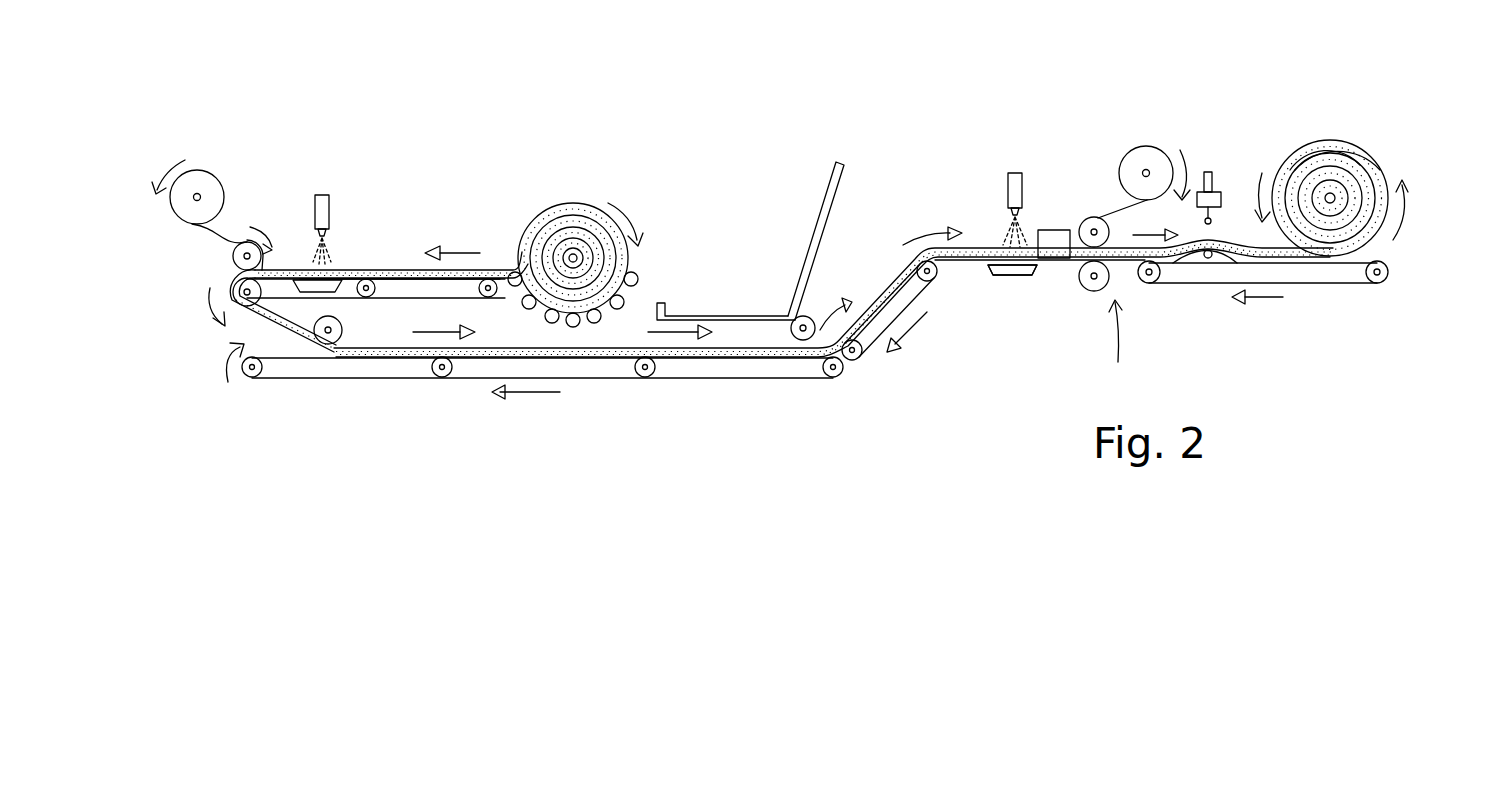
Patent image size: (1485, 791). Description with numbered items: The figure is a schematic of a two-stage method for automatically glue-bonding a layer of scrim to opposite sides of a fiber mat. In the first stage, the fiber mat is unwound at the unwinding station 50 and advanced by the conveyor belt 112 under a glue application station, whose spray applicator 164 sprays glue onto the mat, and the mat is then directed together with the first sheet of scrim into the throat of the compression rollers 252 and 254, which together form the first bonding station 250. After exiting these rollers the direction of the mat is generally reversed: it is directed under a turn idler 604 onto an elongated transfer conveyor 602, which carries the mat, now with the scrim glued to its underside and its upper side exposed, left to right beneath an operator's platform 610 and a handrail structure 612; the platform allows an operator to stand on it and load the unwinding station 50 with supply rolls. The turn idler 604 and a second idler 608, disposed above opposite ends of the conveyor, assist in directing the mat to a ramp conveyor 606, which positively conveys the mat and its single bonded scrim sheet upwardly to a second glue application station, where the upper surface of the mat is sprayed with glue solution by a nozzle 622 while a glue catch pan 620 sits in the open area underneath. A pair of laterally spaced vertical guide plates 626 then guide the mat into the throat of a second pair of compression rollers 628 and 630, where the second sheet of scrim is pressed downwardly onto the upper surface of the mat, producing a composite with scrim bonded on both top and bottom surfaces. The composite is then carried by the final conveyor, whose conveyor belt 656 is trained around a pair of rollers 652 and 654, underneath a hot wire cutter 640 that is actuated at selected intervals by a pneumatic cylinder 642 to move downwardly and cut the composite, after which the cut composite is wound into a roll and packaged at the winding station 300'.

The unwinding station 50 is at (655, 157).
The conveyor belt 112 is at (430, 300).
The spray applicator 164 is at (330, 231).
The first bonding station 250 is at (1105, 345).
The compression roller 252 is at (240, 253).
The compression roller 254 is at (232, 278).
The winding station 300' is at (1361, 139).
The transfer conveyor 602 is at (608, 378).
The turn idler 604 is at (340, 326).
The ramp conveyor 606 is at (918, 295).
The second idler 608 is at (795, 338).
The operator's platform 610 is at (702, 315).
The handrail structure 612 is at (835, 196).
The glue catch pan 620 is at (1004, 277).
The spray nozzle 622 is at (1035, 228).
The vertical guide plates 626 is at (1038, 250).
The compression roller 628 is at (1100, 218).
The compression roller 630 is at (1080, 278).
The hot wire cutter 640 is at (1221, 200).
The pneumatic cylinder 642 is at (1205, 192).
The roller 652 is at (1153, 282).
The roller 654 is at (1377, 283).
The conveyor belt 656 is at (1292, 283).